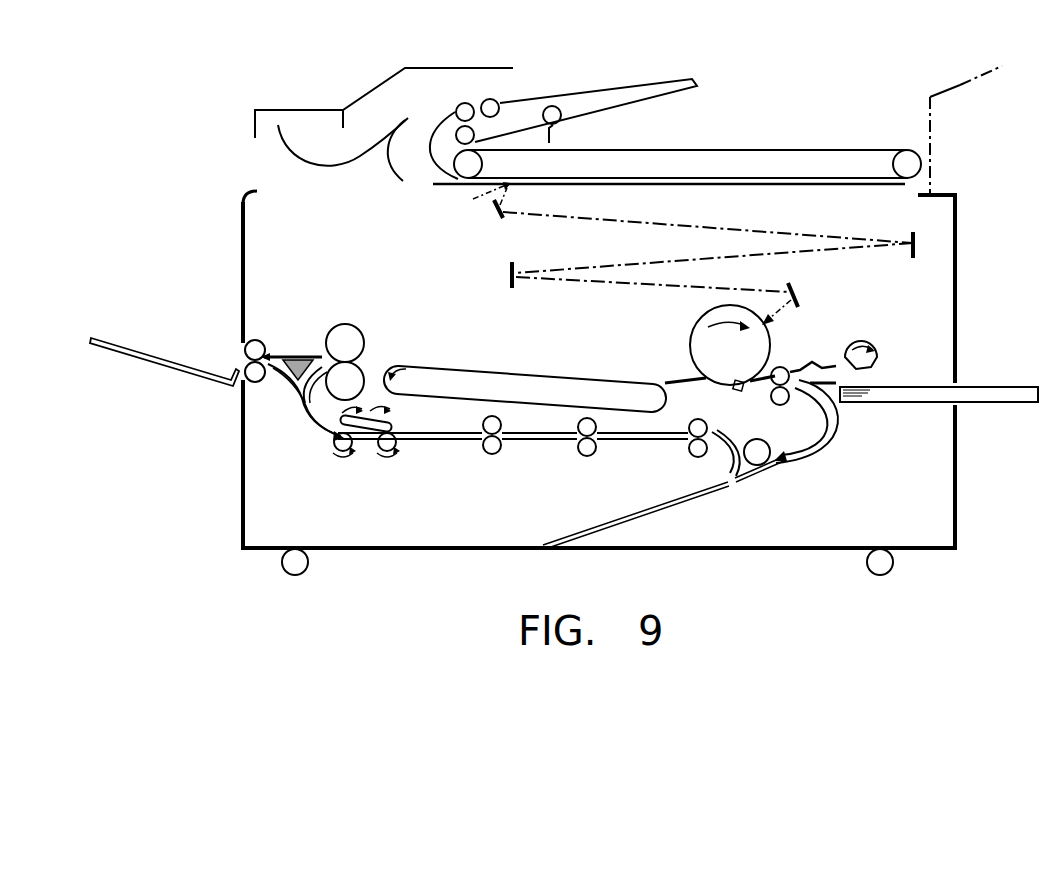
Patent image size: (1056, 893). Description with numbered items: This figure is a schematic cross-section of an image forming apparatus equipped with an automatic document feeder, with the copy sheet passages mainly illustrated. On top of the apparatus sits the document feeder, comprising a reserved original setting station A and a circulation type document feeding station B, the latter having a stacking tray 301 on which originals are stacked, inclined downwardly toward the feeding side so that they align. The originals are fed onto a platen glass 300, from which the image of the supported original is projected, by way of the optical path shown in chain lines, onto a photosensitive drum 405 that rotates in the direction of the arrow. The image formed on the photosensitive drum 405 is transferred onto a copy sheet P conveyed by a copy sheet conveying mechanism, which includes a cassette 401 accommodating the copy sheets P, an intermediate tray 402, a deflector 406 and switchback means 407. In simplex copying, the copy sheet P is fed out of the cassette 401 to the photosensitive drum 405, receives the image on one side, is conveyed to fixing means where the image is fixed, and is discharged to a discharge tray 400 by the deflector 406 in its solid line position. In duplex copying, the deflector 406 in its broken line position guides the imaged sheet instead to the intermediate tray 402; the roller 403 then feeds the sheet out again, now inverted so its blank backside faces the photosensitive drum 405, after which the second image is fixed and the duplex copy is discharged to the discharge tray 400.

The platen glass 300 is at (746, 187).
The stacking tray 301 is at (612, 97).
The discharge tray 400 is at (148, 362).
The cassette 401 is at (912, 403).
The intermediate tray 402 is at (677, 500).
The roller 403 is at (771, 463).
The photosensitive drum 405 is at (690, 340).
The deflector 406 is at (298, 372).
The switchback means 407 is at (392, 421).
The reserved original setting station A is at (954, 80).
The circulation type document feeding station B is at (460, 64).
The copy sheet P is at (912, 387).